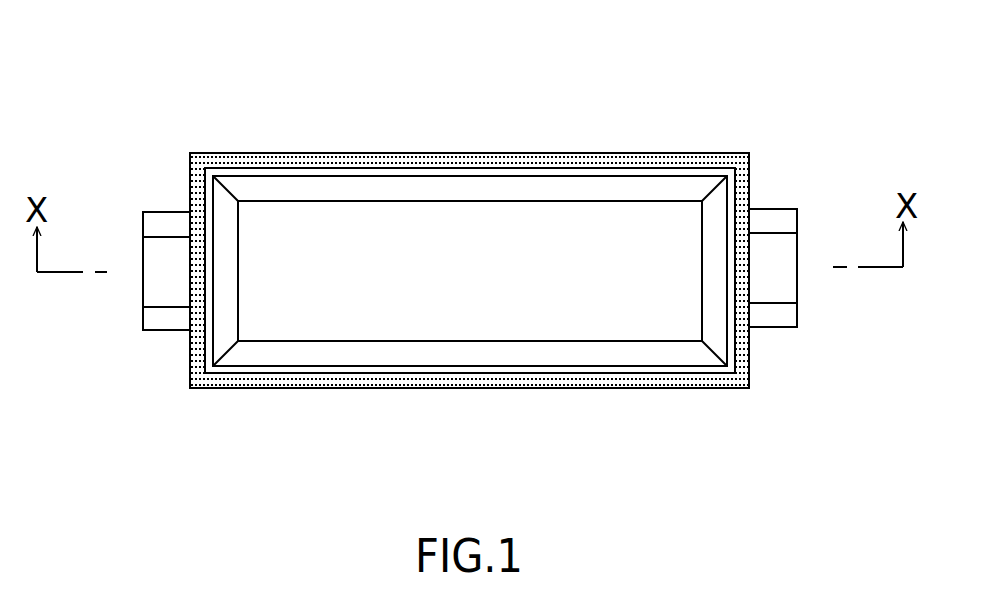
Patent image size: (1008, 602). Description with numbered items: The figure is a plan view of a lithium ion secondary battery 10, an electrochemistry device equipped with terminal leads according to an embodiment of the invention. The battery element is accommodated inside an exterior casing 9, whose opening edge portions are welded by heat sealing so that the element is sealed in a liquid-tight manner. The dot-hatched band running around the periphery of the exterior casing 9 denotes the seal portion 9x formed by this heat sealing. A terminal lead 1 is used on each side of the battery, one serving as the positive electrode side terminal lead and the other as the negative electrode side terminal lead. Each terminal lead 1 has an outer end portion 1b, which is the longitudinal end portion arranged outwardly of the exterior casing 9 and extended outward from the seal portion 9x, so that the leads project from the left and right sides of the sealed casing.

The lithium ion secondary battery 10 is at (255, 117).
The seal portion 9x is at (383, 163).
The exterior casing 9 is at (543, 220).
The terminal lead 1 is at (155, 210).
The outer end portion 1b is at (168, 283).